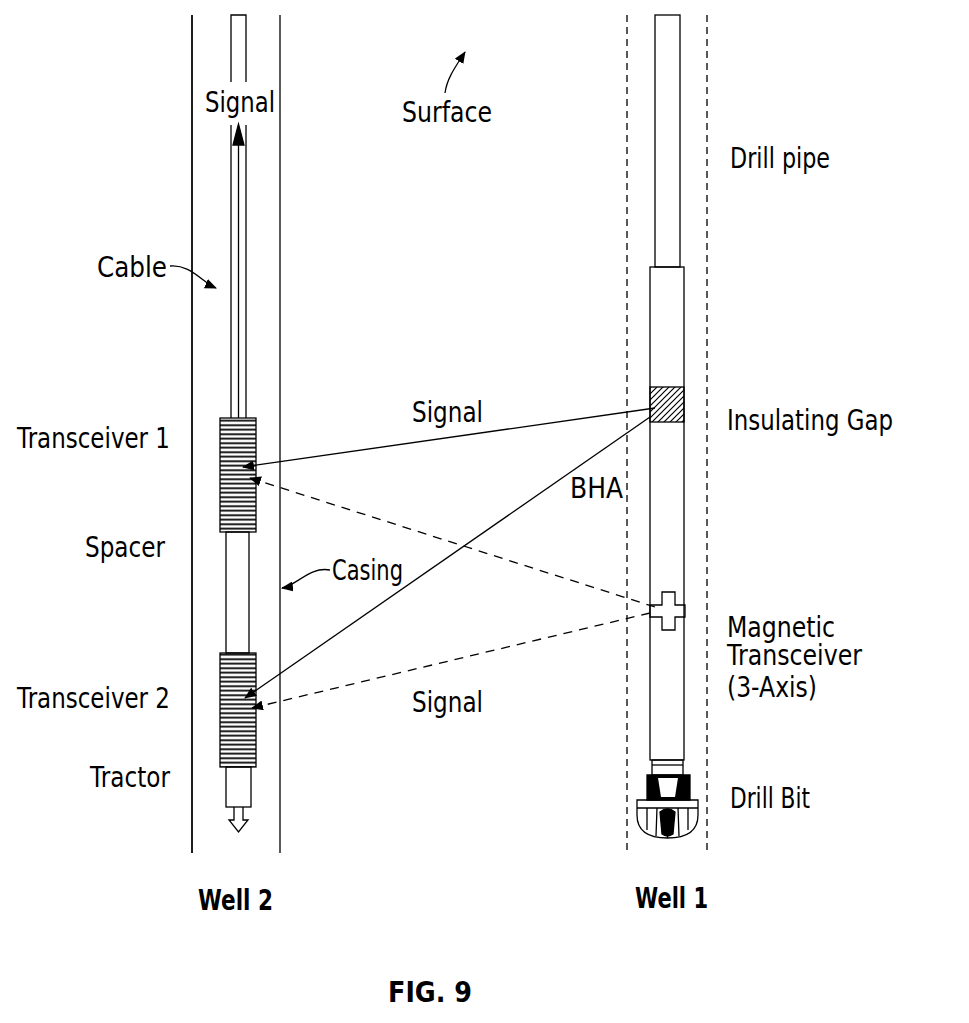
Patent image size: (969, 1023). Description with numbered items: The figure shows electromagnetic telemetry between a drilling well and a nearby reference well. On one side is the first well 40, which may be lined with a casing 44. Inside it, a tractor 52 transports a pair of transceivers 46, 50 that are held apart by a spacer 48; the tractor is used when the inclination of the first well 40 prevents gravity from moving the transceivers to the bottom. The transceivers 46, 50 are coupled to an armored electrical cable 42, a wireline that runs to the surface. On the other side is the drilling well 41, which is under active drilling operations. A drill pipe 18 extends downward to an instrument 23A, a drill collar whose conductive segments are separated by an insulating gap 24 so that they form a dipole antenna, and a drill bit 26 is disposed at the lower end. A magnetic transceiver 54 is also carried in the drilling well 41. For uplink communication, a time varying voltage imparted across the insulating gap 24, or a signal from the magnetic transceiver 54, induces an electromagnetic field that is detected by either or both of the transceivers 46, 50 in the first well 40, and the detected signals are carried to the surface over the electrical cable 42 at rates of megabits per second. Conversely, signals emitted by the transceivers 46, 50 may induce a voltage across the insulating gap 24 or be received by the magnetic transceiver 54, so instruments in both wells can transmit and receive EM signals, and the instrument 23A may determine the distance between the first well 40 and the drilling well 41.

The first well 40 is at (210, 63).
The electrical cable 42 is at (233, 200).
The casing 44 is at (192, 232).
The transceiver 46 is at (220, 492).
The spacer 48 is at (226, 600).
The transceiver 50 is at (220, 700).
The tractor 52 is at (226, 783).
The drilling well 41 is at (687, 72).
The drill pipe 18 is at (680, 102).
The instrument 23A is at (722, 293).
The insulating gap 24 is at (685, 404).
The magnetic transceiver 54 is at (685, 613).
The drill bit 26 is at (690, 797).